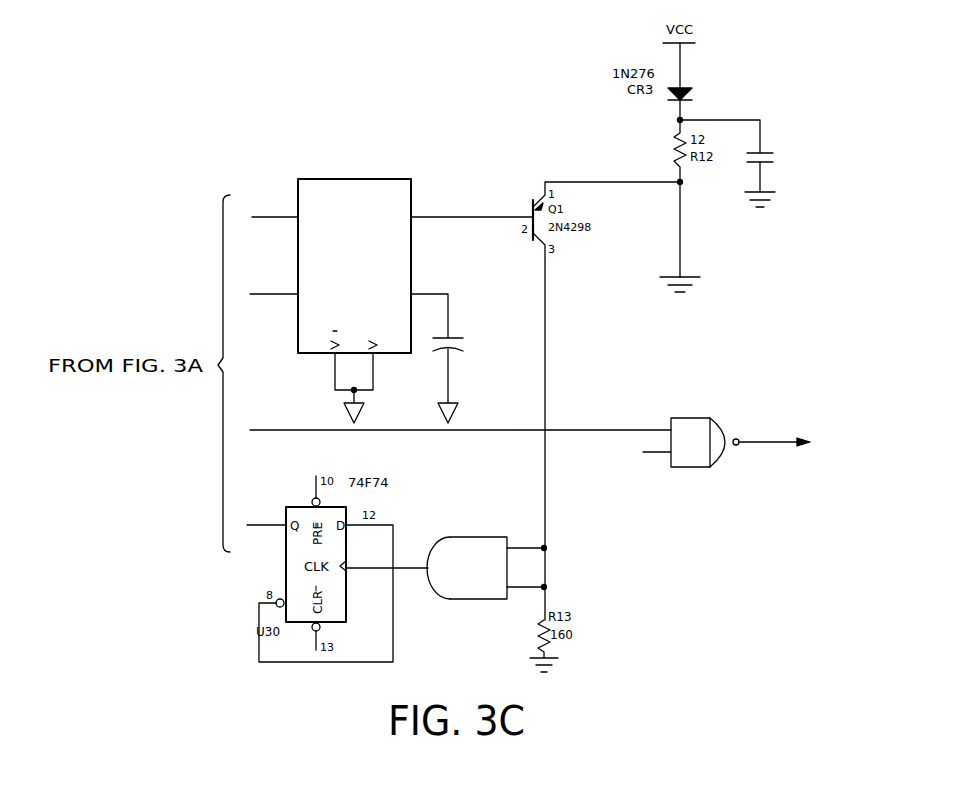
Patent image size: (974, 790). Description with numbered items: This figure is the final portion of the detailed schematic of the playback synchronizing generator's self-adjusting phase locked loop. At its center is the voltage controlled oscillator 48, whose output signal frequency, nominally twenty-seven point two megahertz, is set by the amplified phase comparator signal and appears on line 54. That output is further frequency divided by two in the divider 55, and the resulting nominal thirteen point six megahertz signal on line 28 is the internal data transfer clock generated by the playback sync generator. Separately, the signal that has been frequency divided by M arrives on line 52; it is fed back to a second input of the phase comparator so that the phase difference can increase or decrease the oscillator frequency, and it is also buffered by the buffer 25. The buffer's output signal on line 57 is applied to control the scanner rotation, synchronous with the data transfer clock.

The voltage controlled oscillator 48 is at (405, 183).
The line 54 is at (455, 217).
The line 52 is at (275, 428).
The line 28 is at (247, 524).
The divider 55 is at (408, 515).
The buffer 25 is at (695, 427).
The line 57 is at (752, 440).